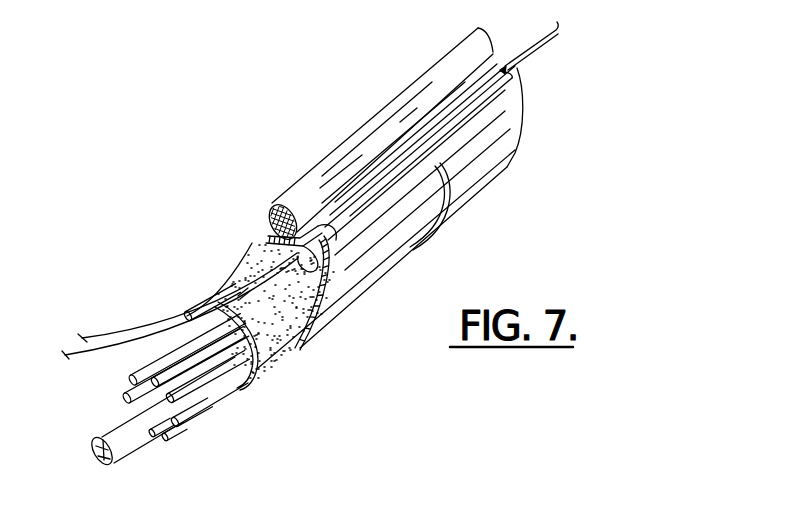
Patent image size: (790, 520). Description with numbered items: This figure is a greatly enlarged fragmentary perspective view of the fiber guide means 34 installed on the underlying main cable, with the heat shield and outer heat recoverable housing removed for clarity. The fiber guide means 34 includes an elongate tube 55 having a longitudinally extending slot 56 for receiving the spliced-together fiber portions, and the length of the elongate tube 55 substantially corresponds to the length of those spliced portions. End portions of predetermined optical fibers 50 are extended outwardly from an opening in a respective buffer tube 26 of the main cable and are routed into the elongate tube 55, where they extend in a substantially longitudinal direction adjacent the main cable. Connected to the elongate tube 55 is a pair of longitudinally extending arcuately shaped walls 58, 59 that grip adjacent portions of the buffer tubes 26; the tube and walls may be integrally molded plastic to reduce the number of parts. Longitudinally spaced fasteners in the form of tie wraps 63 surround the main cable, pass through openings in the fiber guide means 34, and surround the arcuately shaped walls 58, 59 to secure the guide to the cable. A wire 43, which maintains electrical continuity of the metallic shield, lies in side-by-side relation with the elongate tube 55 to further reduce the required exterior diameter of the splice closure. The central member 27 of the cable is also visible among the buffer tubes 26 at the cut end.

The buffer tube 26 is at (178, 438).
The central member 27 is at (108, 463).
The fiber guide means 34 is at (527, 78).
The wire 43 is at (312, 172).
The optical fibers 50 is at (117, 343).
The elongate tube 55 is at (508, 94).
The longitudinally extending slot 56 is at (505, 68).
The arcuately shaped wall 58 is at (252, 247).
The arcuately shaped wall 59 is at (348, 290).
The tie wraps 63 is at (447, 228).